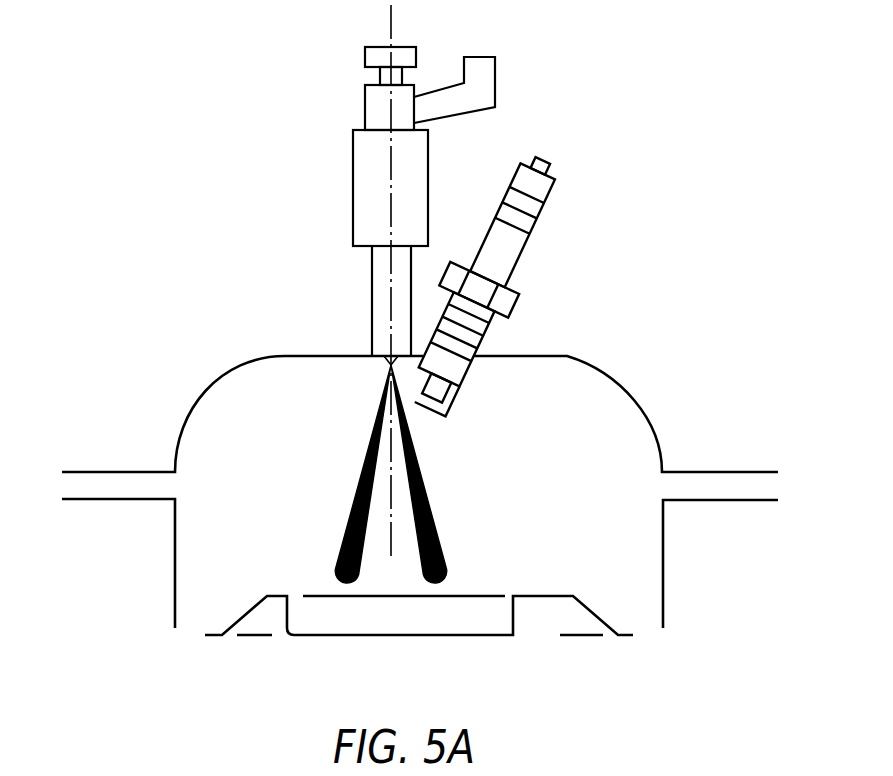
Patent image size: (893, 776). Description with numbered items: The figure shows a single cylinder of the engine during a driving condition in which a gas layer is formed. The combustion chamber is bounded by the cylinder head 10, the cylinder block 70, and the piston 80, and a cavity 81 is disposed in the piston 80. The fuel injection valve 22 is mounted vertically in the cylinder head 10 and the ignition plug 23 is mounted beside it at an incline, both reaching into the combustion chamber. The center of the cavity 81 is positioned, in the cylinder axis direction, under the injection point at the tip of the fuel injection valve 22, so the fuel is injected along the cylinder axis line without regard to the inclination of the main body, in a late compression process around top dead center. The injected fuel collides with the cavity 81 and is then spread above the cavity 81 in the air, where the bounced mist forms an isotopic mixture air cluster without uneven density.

The cylinder head 10 is at (420, 414).
The fuel injection valve 22 is at (362, 195).
The ignition plug 23 is at (531, 255).
The cylinder block 70 is at (420, 563).
The piston 80 is at (419, 647).
The cavity 81 is at (475, 612).